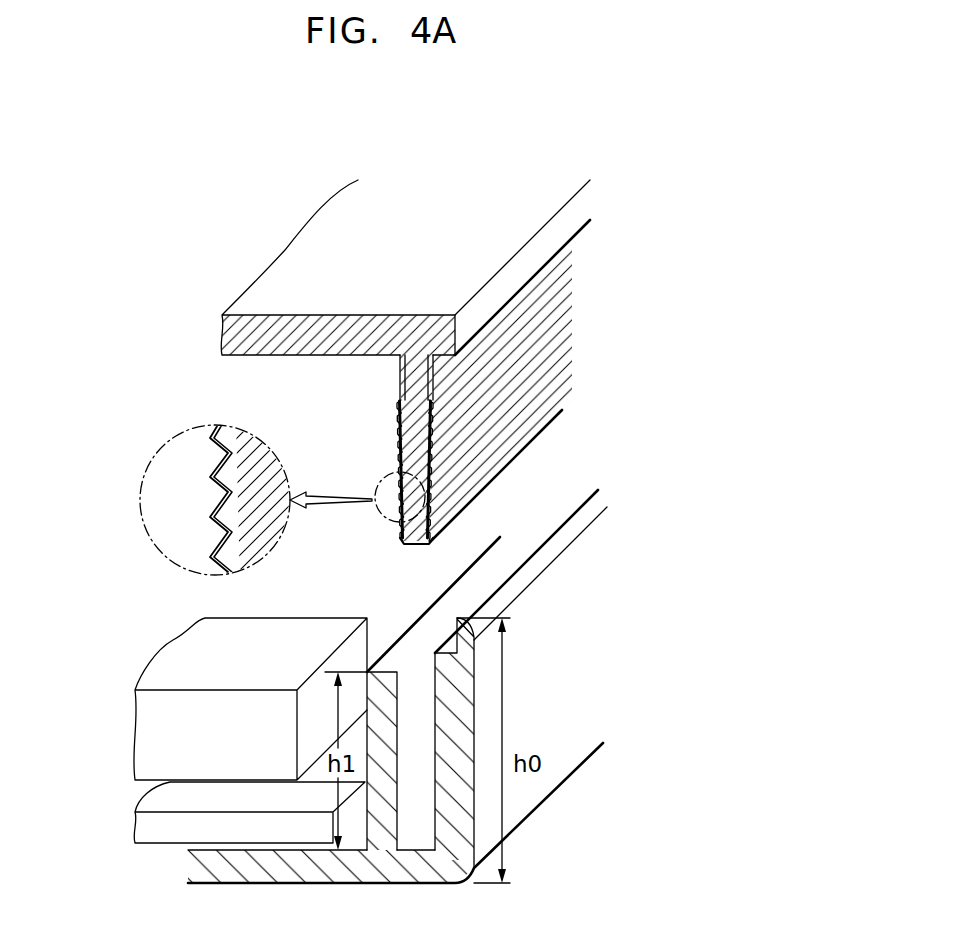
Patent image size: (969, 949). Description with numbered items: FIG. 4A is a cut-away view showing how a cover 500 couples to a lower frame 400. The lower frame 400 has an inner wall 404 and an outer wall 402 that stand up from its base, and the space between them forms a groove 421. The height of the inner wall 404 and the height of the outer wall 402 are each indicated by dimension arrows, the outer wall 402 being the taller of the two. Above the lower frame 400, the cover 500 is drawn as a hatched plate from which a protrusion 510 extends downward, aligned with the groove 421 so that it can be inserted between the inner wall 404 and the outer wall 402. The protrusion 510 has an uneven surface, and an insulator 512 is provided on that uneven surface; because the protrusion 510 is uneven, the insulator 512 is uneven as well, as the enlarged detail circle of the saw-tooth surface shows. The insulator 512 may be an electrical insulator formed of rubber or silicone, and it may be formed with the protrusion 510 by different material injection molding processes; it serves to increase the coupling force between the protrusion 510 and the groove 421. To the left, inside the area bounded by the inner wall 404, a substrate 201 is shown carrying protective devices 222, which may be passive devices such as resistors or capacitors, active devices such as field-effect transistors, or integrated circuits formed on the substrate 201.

The cover 500 is at (498, 245).
The protrusion 510 is at (413, 475).
The insulator 512 is at (432, 437).
The protective devices 222 is at (148, 733).
The substrate 201 is at (148, 830).
The lower frame 400 is at (566, 799).
The outer wall 402 is at (455, 703).
The inner wall 404 is at (378, 777).
The groove 421 is at (415, 807).